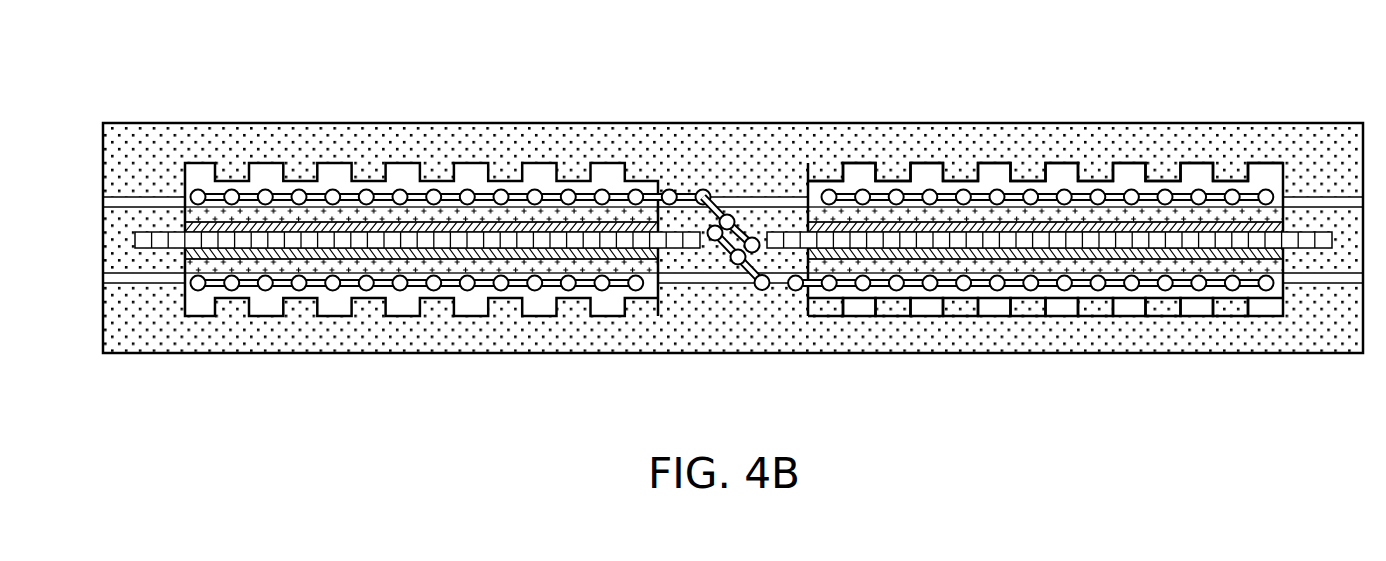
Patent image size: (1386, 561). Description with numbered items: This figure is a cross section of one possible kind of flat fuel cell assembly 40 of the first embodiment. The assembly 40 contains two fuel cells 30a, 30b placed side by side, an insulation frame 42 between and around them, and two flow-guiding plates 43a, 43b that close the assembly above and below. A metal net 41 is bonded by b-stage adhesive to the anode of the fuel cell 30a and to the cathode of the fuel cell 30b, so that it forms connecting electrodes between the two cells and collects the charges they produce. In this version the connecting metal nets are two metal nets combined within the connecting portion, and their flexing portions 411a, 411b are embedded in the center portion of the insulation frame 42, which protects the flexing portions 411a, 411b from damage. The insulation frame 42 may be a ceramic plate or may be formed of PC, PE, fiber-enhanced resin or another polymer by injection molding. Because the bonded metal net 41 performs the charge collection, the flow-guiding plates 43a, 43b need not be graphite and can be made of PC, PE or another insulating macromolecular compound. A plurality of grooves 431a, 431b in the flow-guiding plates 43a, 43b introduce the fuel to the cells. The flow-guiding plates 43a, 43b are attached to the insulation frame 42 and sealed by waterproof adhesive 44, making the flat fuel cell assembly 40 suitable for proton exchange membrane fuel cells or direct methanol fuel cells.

The fuel cell assembly 40 is at (188, 84).
The fuel cell 30a is at (448, 175).
The fuel cell 30b is at (1035, 240).
The metal net 41 is at (451, 163).
The flexing portion 411a is at (672, 190).
The flexing portion 411b is at (766, 290).
The insulation frame 42 is at (745, 208).
The flow-guiding plate 43a is at (1200, 135).
The flow-guiding plate 43b is at (1200, 340).
The grooves 431a is at (928, 172).
The grooves 431b is at (930, 307).
The waterproof adhesive 44 is at (788, 200).